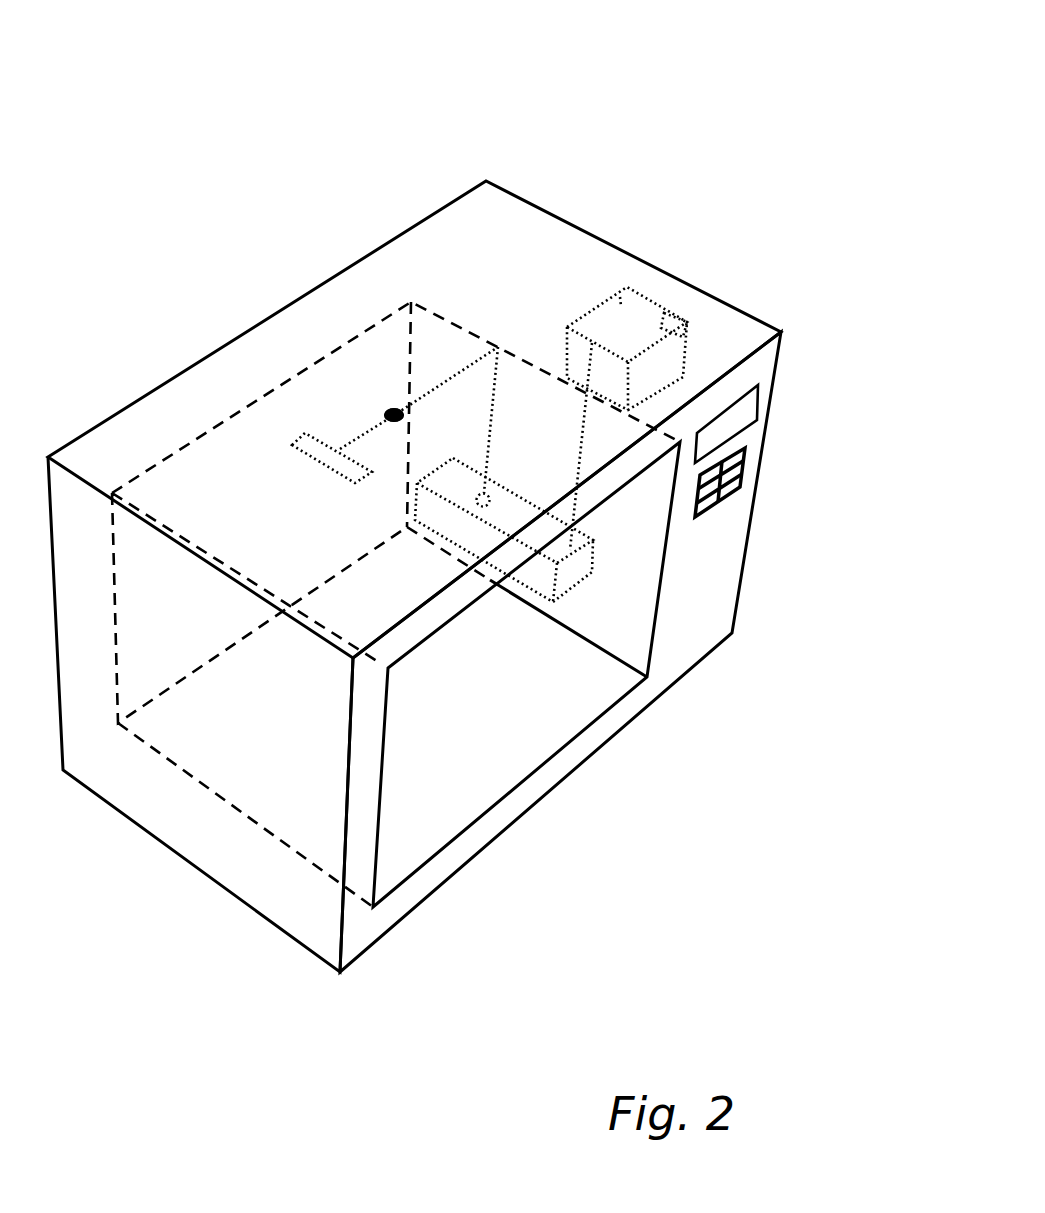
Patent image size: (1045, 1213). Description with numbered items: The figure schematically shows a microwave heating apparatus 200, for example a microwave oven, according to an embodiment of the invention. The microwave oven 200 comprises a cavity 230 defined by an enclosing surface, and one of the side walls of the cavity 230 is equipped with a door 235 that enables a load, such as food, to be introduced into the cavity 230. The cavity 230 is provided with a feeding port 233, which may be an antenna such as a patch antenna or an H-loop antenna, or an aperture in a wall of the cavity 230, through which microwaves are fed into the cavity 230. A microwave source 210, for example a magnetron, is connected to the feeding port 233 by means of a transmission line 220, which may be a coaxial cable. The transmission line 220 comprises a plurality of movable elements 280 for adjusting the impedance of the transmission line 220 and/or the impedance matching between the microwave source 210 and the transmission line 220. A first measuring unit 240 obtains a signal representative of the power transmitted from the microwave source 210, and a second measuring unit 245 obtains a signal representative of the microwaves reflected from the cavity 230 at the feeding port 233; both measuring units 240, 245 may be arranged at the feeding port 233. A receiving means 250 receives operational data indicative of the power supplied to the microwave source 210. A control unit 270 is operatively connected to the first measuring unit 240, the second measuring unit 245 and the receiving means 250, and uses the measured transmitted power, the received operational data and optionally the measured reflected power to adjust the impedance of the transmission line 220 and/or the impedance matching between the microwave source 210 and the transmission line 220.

The microwave heating apparatus 200 is at (596, 96).
The microwave source 210 is at (593, 572).
The transmission line 220 is at (481, 358).
The cavity 230 is at (458, 763).
The feeding port 233 is at (320, 443).
The door 235 is at (505, 770).
The first measuring unit 240 is at (393, 408).
The second measuring unit 245 is at (394, 415).
The receiving means 250 is at (684, 302).
The control unit 270 is at (665, 270).
The movable elements 280 is at (428, 382).